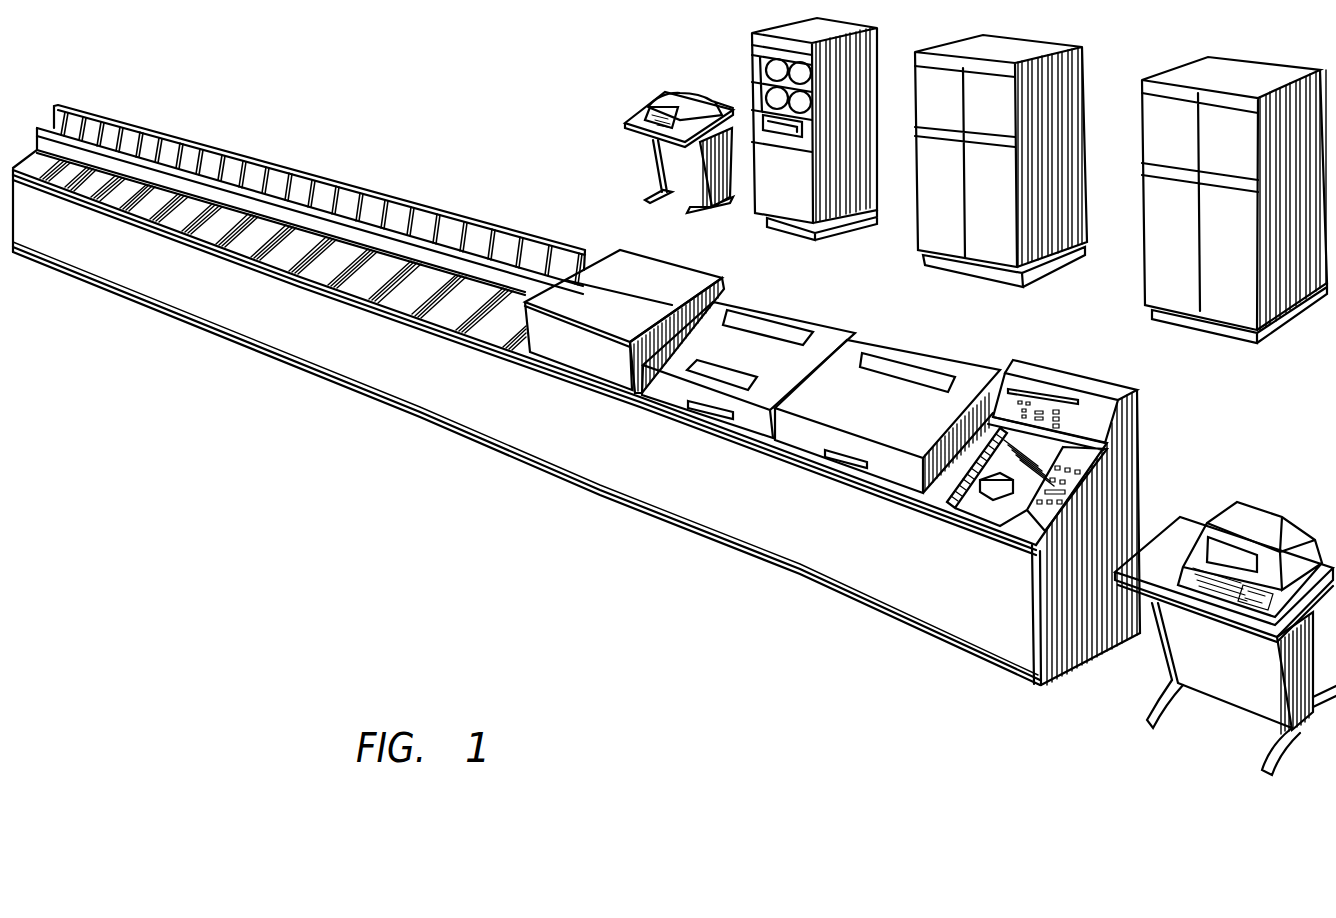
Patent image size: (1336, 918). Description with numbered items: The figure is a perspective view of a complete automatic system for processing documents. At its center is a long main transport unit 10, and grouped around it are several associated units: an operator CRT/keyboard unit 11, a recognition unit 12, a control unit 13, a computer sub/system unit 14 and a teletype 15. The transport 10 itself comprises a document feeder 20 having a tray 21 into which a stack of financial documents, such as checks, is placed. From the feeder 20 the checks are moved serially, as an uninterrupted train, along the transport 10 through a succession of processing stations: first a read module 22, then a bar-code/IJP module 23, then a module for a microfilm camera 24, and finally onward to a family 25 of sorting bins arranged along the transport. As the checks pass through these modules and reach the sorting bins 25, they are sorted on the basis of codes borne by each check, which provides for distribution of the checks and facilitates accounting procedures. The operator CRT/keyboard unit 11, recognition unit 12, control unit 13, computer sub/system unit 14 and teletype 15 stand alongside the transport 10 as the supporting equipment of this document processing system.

The main transport unit 10 is at (400, 381).
The operator CRT/keyboard unit 11 is at (1285, 537).
The recognition unit 12 is at (1268, 270).
The control unit 13 is at (1022, 234).
The computer sub/system unit 14 is at (824, 184).
The teletype 15 is at (642, 111).
The document feeder 20 is at (1110, 390).
The tray 21 is at (983, 503).
The read module 22 is at (940, 362).
The bar-code/IJP module 23 is at (810, 324).
The module for a microfilm camera 24 is at (667, 279).
The family of sorting bins 25 is at (320, 178).